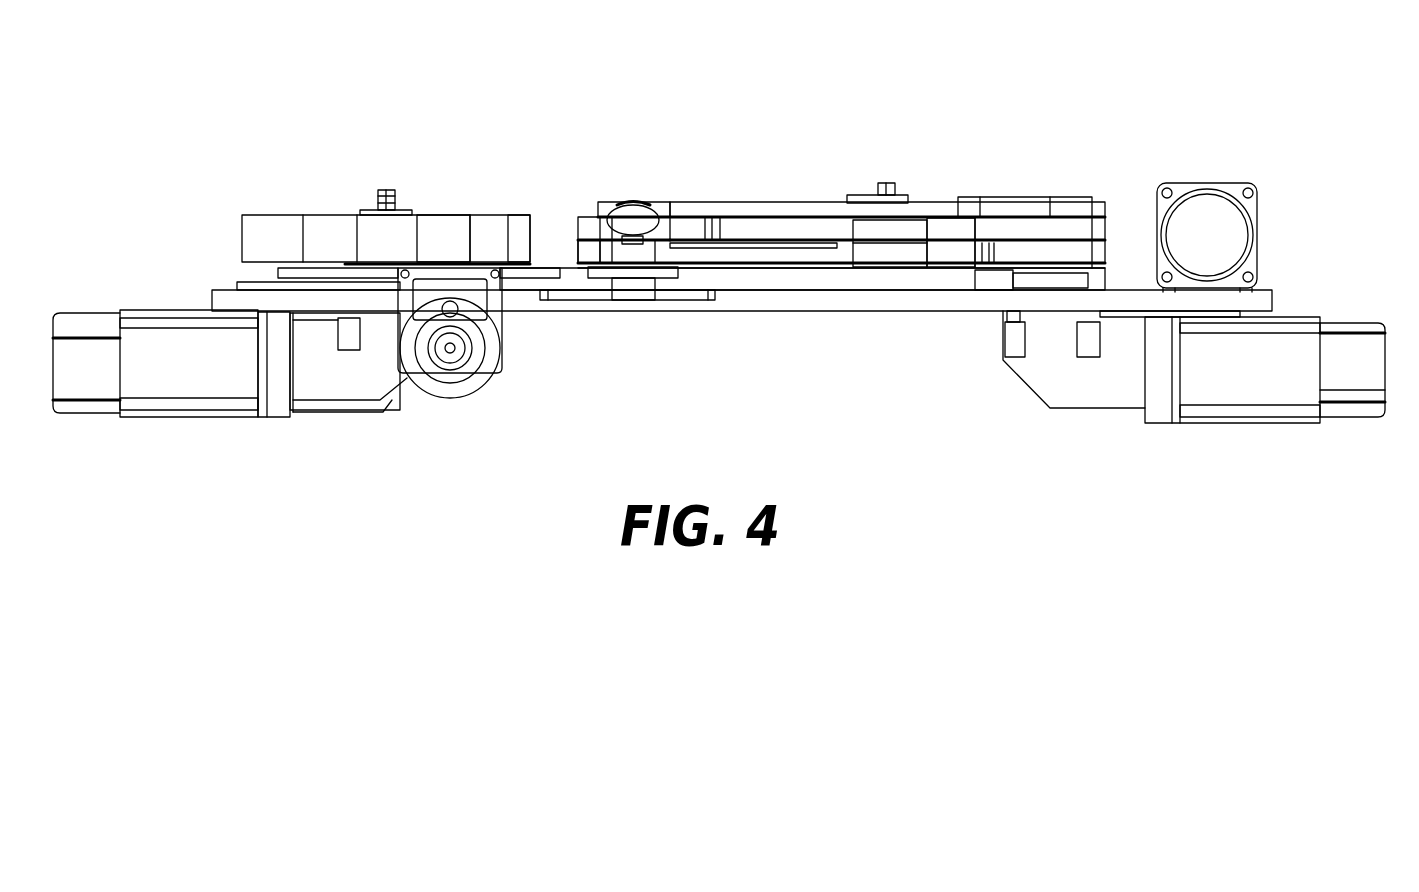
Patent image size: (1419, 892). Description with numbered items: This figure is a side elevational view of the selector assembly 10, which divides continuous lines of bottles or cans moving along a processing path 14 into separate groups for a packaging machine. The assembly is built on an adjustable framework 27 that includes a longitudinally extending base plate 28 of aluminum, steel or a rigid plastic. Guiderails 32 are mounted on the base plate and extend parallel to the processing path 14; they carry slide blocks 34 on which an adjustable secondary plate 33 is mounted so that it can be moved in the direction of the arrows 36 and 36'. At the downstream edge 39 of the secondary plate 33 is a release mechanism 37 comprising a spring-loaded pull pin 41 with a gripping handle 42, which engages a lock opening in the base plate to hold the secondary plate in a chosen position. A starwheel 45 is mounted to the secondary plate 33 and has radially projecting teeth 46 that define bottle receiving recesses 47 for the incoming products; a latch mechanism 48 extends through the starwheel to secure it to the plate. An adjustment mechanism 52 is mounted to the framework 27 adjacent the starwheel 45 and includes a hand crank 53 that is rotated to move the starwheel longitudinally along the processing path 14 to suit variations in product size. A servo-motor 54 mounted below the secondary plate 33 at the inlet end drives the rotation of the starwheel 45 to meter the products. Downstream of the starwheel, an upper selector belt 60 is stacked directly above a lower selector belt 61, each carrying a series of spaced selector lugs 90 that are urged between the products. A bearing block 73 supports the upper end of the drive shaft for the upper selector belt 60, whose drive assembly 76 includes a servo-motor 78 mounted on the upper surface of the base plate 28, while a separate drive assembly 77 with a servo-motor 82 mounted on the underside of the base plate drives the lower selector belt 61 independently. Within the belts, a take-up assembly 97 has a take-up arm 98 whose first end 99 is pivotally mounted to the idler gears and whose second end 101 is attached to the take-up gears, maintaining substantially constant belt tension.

The selector assembly 10 is at (1138, 134).
The processing path 14 is at (647, 119).
The adjustable framework 27 is at (757, 313).
The base plate 28 is at (812, 293).
The guiderails 32 is at (255, 275).
The secondary plate 33 is at (527, 290).
The slide blocks 34 is at (322, 290).
The arrow 36 is at (386, 189).
The arrow 36' is at (346, 132).
The release mechanism 37 is at (669, 232).
The downstream edge 39 is at (578, 262).
The pull pin 41 is at (632, 250).
The gripping handle 42 is at (658, 206).
The starwheel 45 is at (440, 212).
The teeth 46 is at (530, 215).
The bottle receiving recesses 47 is at (455, 251).
The latch mechanism 48 is at (367, 210).
The adjustment mechanism 52 is at (501, 325).
The hand crank 53 is at (450, 378).
The servo-motor 54 is at (195, 380).
The upper selector belt 60 is at (951, 228).
The lower selector belt 61 is at (886, 256).
The bearing block 73 is at (1030, 197).
The drive assembly 76 is at (1184, 181).
The drive assembly 77 is at (1098, 414).
The servo-motor 78 is at (1225, 210).
The servo-motor 82 is at (1237, 385).
The selector lugs 90 is at (735, 216).
The take-up assembly 97 is at (777, 203).
The take-up arm 98 is at (815, 204).
The first end 99 is at (612, 205).
The second end 101 is at (930, 205).